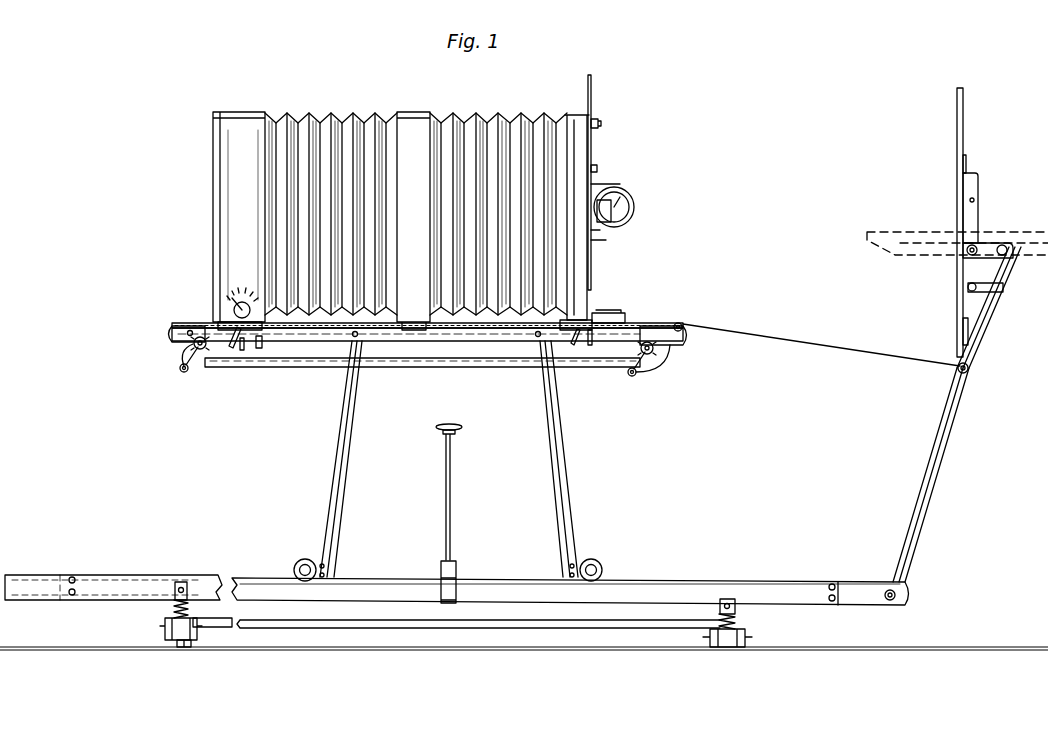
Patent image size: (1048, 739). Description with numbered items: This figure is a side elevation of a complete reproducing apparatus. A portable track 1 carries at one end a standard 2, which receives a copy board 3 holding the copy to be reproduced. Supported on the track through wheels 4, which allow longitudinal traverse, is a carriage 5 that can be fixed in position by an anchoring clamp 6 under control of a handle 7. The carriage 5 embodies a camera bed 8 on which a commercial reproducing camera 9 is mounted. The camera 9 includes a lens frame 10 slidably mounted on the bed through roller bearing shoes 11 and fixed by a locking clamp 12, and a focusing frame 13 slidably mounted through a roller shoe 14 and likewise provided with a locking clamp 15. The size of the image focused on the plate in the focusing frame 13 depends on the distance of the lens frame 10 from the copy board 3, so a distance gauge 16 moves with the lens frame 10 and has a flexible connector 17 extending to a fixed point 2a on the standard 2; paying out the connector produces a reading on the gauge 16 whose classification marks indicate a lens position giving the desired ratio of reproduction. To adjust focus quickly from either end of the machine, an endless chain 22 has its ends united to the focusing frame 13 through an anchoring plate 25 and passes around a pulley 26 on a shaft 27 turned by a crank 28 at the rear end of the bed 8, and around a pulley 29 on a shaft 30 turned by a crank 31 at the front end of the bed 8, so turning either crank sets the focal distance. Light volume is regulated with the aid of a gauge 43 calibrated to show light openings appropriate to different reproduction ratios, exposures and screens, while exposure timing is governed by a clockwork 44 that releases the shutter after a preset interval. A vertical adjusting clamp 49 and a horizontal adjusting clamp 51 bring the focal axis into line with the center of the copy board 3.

The portable track 1 is at (690, 586).
The standard 2 is at (932, 426).
The fixed point 2a is at (968, 372).
The copy board 3 is at (957, 175).
The wheels 4 is at (301, 562).
The carriage 5 is at (573, 446).
The anchoring clamp 6 is at (458, 566).
The handle 7 is at (453, 428).
The camera bed 8 is at (174, 335).
The reproducing camera 9 is at (368, 118).
The lens frame 10 is at (580, 252).
The roller bearing shoes 11 is at (590, 348).
The locking clamp 12 is at (575, 347).
The focusing frame 13 is at (229, 200).
The roller shoe 14 is at (238, 350).
The locking clamp 15 is at (242, 352).
The distance gauge 16 is at (620, 312).
The flexible connector 17 is at (821, 339).
The endless chain 22 is at (324, 370).
The anchoring plate 25 is at (262, 342).
The pulley 26 is at (201, 352).
The shaft 27 is at (182, 352).
The crank 28 is at (181, 372).
The pulley 29 is at (655, 355).
The shaft 30 is at (662, 368).
The crank 31 is at (636, 376).
The light opening gauge 43 is at (592, 243).
The clockwork 44 is at (636, 207).
The vertical adjusting clamp 49 is at (601, 122).
The horizontal adjusting clamp 51 is at (598, 169).